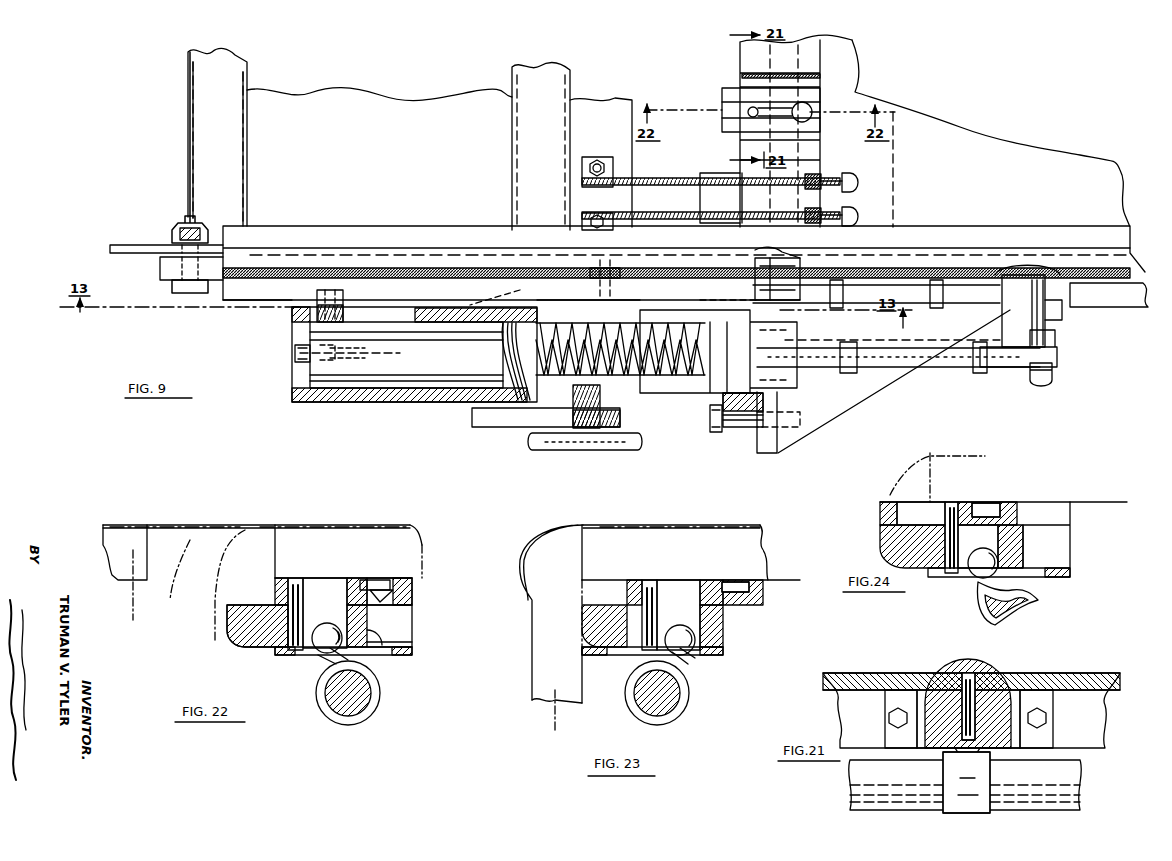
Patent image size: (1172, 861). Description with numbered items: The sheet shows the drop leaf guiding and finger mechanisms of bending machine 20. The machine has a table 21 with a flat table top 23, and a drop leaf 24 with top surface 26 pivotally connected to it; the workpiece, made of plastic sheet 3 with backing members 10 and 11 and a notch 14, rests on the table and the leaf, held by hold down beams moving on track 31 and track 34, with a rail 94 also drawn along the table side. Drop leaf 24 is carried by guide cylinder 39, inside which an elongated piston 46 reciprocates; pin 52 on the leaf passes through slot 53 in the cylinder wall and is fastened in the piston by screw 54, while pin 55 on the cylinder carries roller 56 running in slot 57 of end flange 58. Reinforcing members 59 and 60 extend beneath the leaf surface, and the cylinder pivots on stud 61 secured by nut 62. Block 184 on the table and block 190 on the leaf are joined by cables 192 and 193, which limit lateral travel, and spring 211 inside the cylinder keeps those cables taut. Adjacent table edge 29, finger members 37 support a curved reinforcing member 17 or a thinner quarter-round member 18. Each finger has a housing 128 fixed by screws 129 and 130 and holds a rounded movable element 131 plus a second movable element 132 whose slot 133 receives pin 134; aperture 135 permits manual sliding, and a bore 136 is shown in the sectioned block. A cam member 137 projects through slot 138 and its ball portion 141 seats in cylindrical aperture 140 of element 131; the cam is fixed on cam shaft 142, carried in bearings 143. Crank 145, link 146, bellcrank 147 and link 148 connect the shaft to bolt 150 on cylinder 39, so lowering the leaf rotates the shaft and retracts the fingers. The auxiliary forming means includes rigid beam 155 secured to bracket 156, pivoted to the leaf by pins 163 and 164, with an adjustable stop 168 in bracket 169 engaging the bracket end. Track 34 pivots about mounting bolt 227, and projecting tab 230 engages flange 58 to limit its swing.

In FIG. 22, the plastic sheet 3 is at (335, 522).
In FIG. 23, the plastic sheet 3 is at (708, 525).
In FIG. 22, the backing member 10 is at (410, 572).
In FIG. 23, the backing member 10 is at (750, 557).
In FIG. 22, the plywood backing member 11 is at (125, 573).
In FIG. 23, the plywood backing member 11 is at (557, 714).
In FIG. 22, the notch 14 is at (174, 576).
In FIG. 22, the curved reinforcing member 17 is at (228, 585).
In FIG. 23, the curved reinforcing member 17 is at (538, 560).
In FIG. 24, the reinforcing member 18 is at (965, 460).
In FIG. 9, the machine 20 is at (912, 104).
In FIG. 9, the table 21 is at (1082, 165).
In FIG. 9, the table top 23 is at (995, 138).
In FIG. 21, the table top 23 is at (1070, 675).
In FIG. 9, the drop leaf 24 is at (280, 96).
In FIG. 9, the top surface 26 is at (322, 112).
In FIG. 9, the table top edge 29 is at (752, 52).
In FIG. 9, the track 31 is at (1098, 243).
In FIG. 9, the track 34 is at (290, 222).
In FIG. 9, the finger member 37 is at (722, 112).
In FIG. 22, the finger member 37 is at (235, 633).
In FIG. 23, the finger member 37 is at (762, 612).
In FIG. 24, the finger member 37 is at (968, 487).
In FIG. 21, the finger member 37 is at (905, 662).
In FIG. 9, the guide cylinder 39 is at (337, 398).
In FIG. 9, the piston 46 is at (445, 388).
In FIG. 9, the pin 52 is at (343, 310).
In FIG. 9, the slot 53 is at (400, 316).
In FIG. 9, the screw 54 is at (362, 354).
In FIG. 9, the pin 55 is at (640, 294).
In FIG. 9, the roller 56 is at (640, 270).
In FIG. 9, the slot 57 is at (560, 248).
In FIG. 9, the end flange 58 is at (168, 262).
In FIG. 9, the reinforcing member 59 is at (218, 68).
In FIG. 9, the reinforcing member 60 is at (540, 78).
In FIG. 9, the stud 61 is at (748, 425).
In FIG. 9, the nut 62 is at (762, 428).
In FIG. 9, the slide rail 94 is at (360, 262).
In FIG. 9, the housing 128 is at (808, 140).
In FIG. 22, the housing 128 is at (412, 650).
In FIG. 23, the housing 128 is at (723, 653).
In FIG. 24, the housing 128 is at (1070, 565).
In FIG. 21, the housing 128 is at (1000, 748).
In FIG. 21, the screw 129 is at (889, 718).
In FIG. 21, the screw 130 is at (1048, 716).
In FIG. 9, the movable element 131 is at (722, 110).
In FIG. 22, the movable element 131 is at (400, 625).
In FIG. 23, the movable element 131 is at (723, 625).
In FIG. 21, the movable element 131 is at (998, 695).
In FIG. 22, the second movable element 132 is at (412, 600).
In FIG. 23, the second movable element 132 is at (762, 593).
In FIG. 24, the second movable element 132 is at (1017, 518).
In FIG. 21, the second movable element 132 is at (940, 685).
In FIG. 9, the slot 133 is at (818, 95).
In FIG. 22, the slot 133 is at (340, 590).
In FIG. 23, the slot 133 is at (668, 590).
In FIG. 24, the slot 133 is at (910, 505).
In FIG. 9, the pin 134 is at (748, 110).
In FIG. 22, the pin 134 is at (300, 578).
In FIG. 23, the pin 134 is at (648, 580).
In FIG. 24, the pin 134 is at (950, 502).
In FIG. 21, the pin 134 is at (975, 685).
In FIG. 22, the aperture 135 is at (380, 578).
In FIG. 23, the aperture 135 is at (748, 580).
In FIG. 24, the aperture 135 is at (1000, 502).
In FIG. 21, the aperture 135 is at (982, 690).
In FIG. 9, the bore 136 is at (812, 108).
In FIG. 22, the cam member 137 is at (320, 672).
In FIG. 23, the cam member 137 is at (628, 672).
In FIG. 24, the cam member 137 is at (955, 592).
In FIG. 22, the slot 138 is at (380, 655).
In FIG. 22, the cylindrical aperture 140 is at (322, 610).
In FIG. 22, the ball portion 141 is at (318, 645).
In FIG. 23, the ball portion 141 is at (690, 655).
In FIG. 24, the ball portion 141 is at (975, 577).
In FIG. 21, the ball portion 141 is at (958, 752).
In FIG. 9, the cam shaft 142 is at (820, 60).
In FIG. 22, the cam shaft 142 is at (366, 708).
In FIG. 23, the cam shaft 142 is at (682, 700).
In FIG. 24, the cam shaft 142 is at (1030, 600).
In FIG. 21, the cam shaft 142 is at (1070, 773).
In FIG. 9, the bearings 143 is at (790, 250).
In FIG. 9, the crank 145 is at (790, 290).
In FIG. 9, the link 146 is at (960, 300).
In FIG. 9, the bellcrank 147 is at (1048, 312).
In FIG. 9, the link 148 is at (945, 360).
In FIG. 9, the bolt 150 is at (805, 338).
In FIG. 9, the rigid beam 155 is at (568, 390).
In FIG. 9, the bracket 156 is at (488, 424).
In FIG. 9, the pin 163 is at (578, 425).
In FIG. 9, the pin 164 is at (556, 448).
In FIG. 9, the stop 168 is at (712, 420).
In FIG. 9, the bracket 169 is at (798, 433).
In FIG. 9, the block 184 is at (705, 174).
In FIG. 9, the block 190 is at (607, 158).
In FIG. 9, the cable 192 is at (650, 176).
In FIG. 9, the cable 193 is at (650, 210).
In FIG. 9, the spring 211 is at (520, 400).
In FIG. 9, the mounting bolt 227 is at (183, 222).
In FIG. 9, the projecting tab 230 is at (130, 247).